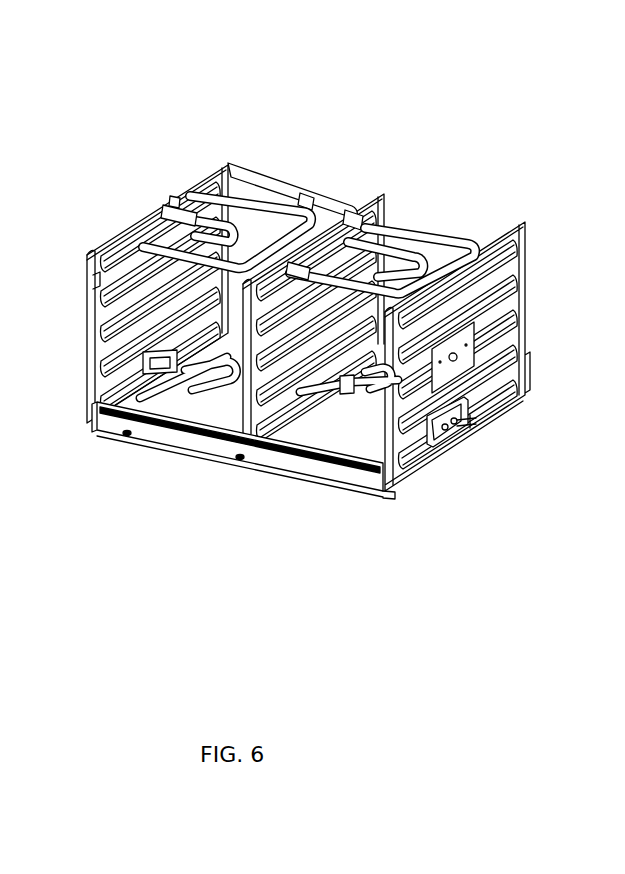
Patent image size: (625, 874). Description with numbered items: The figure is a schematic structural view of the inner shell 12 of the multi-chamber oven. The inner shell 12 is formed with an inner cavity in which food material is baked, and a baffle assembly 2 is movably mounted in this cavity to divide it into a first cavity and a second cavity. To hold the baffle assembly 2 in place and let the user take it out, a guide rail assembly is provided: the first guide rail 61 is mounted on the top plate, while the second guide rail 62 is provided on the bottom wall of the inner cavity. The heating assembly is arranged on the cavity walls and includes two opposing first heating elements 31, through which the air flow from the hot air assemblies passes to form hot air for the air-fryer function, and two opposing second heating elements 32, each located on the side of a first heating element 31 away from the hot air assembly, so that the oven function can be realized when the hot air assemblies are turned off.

The baffle assembly 2 is at (170, 203).
The inner shell 12 is at (410, 438).
The first heating element 31 is at (288, 205).
The second heating element 32 is at (152, 400).
The first guide rail 61 is at (267, 285).
The second guide rail 62 is at (313, 395).